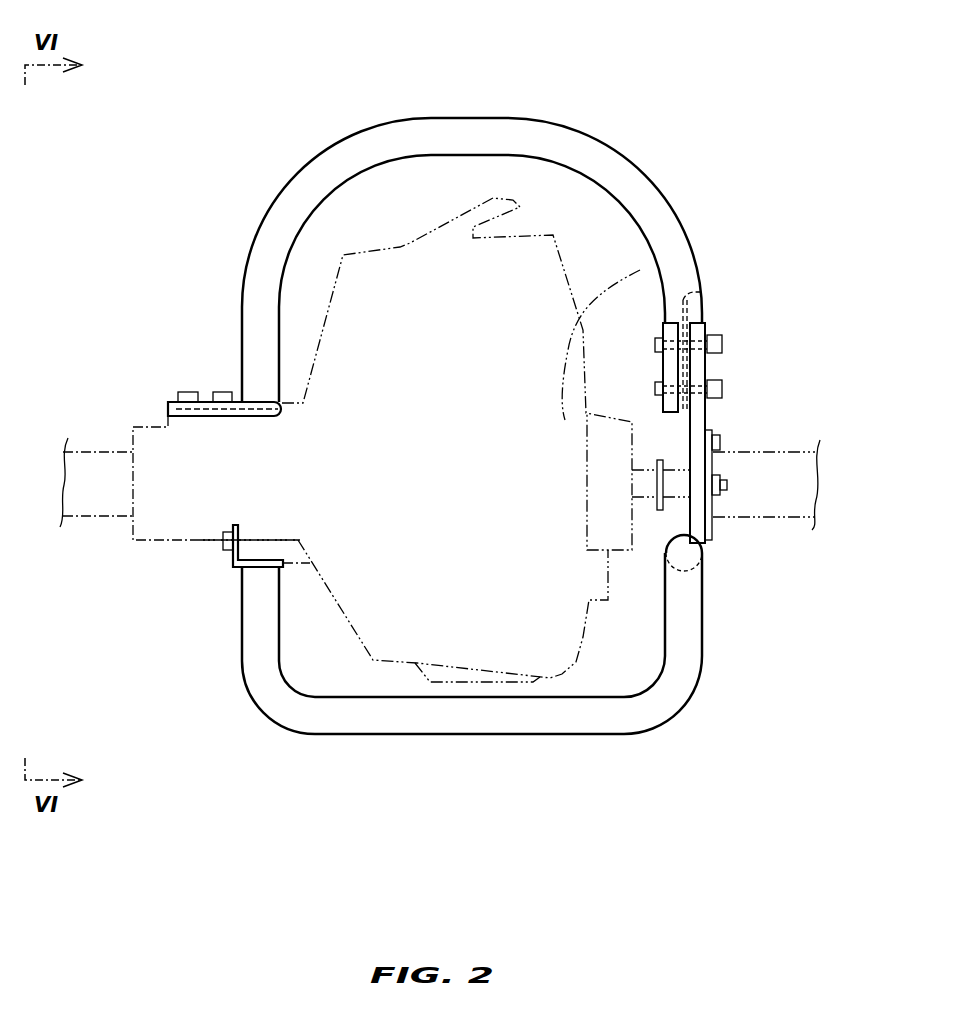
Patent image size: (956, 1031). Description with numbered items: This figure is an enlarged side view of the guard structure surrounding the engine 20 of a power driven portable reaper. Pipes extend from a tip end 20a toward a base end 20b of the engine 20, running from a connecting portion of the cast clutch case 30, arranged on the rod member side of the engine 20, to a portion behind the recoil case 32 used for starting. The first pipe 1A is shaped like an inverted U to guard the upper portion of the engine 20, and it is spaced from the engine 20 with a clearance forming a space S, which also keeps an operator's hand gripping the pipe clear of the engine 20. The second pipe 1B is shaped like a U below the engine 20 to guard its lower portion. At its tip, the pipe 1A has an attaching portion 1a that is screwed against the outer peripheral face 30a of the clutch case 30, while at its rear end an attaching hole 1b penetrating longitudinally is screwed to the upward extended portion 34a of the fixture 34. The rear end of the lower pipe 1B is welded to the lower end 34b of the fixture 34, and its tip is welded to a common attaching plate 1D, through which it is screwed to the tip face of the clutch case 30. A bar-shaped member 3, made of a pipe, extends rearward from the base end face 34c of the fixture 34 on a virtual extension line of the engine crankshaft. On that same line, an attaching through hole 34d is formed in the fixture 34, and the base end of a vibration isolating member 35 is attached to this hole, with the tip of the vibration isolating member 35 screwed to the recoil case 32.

The first pipe 1A is at (472, 130).
The second pipe 1B is at (585, 717).
The attaching portion 1a is at (177, 407).
The attaching hole 1b is at (703, 292).
The common attaching plate 1D is at (234, 559).
The space S is at (382, 187).
The engine 20 is at (552, 272).
The tip end 20a is at (235, 447).
The base end 20b is at (640, 270).
The clutch case 30 is at (167, 520).
The outer peripheral face 30a is at (208, 423).
The recoil case 32 is at (617, 540).
The fixture 34 is at (741, 433).
The upward extended portion 34a is at (705, 367).
The lower end 34b is at (704, 553).
The base end face 34c is at (704, 548).
The attaching through hole 34d is at (708, 530).
The vibration isolating member 35 is at (690, 482).
The bar-shaped member 3 is at (768, 452).